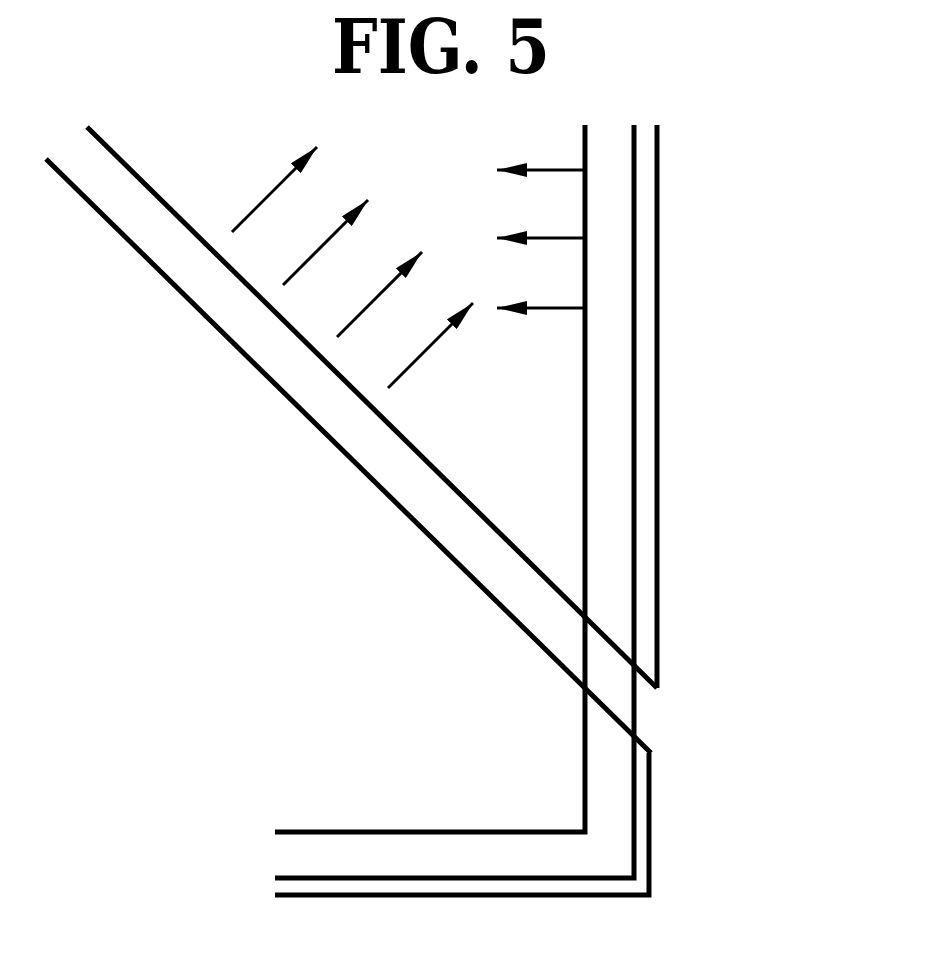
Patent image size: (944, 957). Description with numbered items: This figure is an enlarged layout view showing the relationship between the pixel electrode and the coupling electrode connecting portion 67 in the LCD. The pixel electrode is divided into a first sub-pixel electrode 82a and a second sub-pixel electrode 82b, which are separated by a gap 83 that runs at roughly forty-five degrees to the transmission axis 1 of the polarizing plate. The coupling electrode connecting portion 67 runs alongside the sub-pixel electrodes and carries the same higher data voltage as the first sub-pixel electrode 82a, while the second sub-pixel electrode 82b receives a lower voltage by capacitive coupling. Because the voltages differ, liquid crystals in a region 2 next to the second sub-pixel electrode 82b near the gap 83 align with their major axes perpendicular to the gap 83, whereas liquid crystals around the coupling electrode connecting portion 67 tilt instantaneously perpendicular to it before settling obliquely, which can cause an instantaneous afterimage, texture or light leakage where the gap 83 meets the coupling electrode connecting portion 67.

The second sub-pixel electrode 82b is at (658, 198).
The coupling electrode connecting portion 67 is at (636, 320).
The first sub-pixel electrode 82a is at (652, 792).
The gap 83 is at (333, 412).
The transmission axis 1 is at (541, 239).
The region ② 2 is at (352, 267).